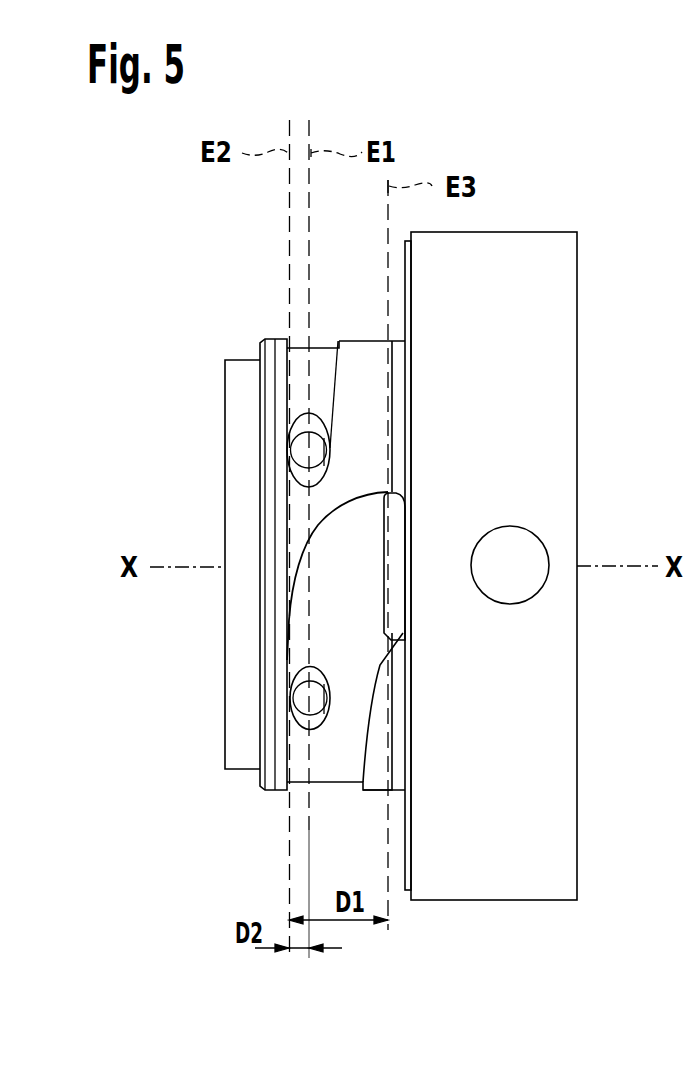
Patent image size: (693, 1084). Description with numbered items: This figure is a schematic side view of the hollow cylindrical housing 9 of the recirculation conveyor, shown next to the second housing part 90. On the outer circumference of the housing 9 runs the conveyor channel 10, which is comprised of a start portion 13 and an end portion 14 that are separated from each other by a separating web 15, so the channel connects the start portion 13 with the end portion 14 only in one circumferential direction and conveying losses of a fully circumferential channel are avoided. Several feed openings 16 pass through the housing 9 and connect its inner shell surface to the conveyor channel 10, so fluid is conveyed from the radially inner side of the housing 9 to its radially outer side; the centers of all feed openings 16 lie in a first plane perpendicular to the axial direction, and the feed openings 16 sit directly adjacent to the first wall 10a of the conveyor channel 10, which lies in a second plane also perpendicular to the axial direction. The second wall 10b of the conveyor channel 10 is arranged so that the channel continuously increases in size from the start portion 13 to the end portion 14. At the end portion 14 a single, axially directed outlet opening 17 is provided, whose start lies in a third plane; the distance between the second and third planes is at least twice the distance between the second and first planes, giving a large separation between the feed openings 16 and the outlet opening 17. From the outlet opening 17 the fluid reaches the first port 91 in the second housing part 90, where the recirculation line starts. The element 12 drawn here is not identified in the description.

The housing 9 is at (279, 350).
The conveyor channel 10 is at (330, 773).
The first wall 10a is at (307, 392).
The second wall 10b is at (350, 763).
The end face 12 is at (384, 762).
The start portion 13 is at (282, 430).
The end portion 14 is at (342, 572).
The separating web 15 is at (327, 493).
The feed openings 16 is at (310, 447).
The outlet opening 17 is at (395, 520).
The second housing part 90 is at (548, 327).
The first port 91 is at (523, 555).